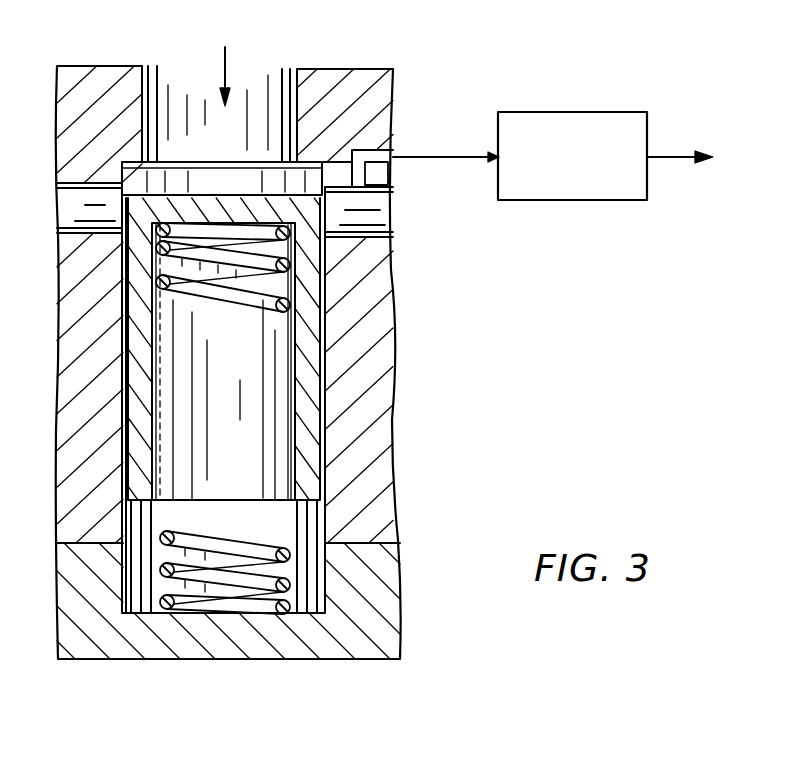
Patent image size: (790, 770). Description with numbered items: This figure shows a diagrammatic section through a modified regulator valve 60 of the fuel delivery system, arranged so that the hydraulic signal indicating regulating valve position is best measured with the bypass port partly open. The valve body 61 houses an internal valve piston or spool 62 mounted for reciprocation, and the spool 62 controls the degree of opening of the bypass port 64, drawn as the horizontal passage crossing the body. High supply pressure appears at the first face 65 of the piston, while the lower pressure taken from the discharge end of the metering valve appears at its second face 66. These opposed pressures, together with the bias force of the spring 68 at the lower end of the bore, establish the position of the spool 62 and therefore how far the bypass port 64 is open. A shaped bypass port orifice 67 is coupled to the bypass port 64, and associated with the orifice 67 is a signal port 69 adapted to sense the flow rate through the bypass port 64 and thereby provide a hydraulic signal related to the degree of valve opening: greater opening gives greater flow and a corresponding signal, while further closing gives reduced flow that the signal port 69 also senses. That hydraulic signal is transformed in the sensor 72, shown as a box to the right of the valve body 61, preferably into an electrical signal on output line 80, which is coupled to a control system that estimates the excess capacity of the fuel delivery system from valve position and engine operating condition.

The regulator valve 60 is at (445, 60).
The valve body 61 is at (380, 286).
The valve spool 62 is at (313, 365).
The bypass port 64 is at (362, 213).
The first face 65 is at (247, 192).
The second face 66 is at (165, 522).
The bypass port orifice 67 is at (357, 150).
The spring 68 is at (238, 507).
The signal port 69 is at (392, 150).
The sensor 72 is at (588, 202).
The output line 80 is at (672, 153).